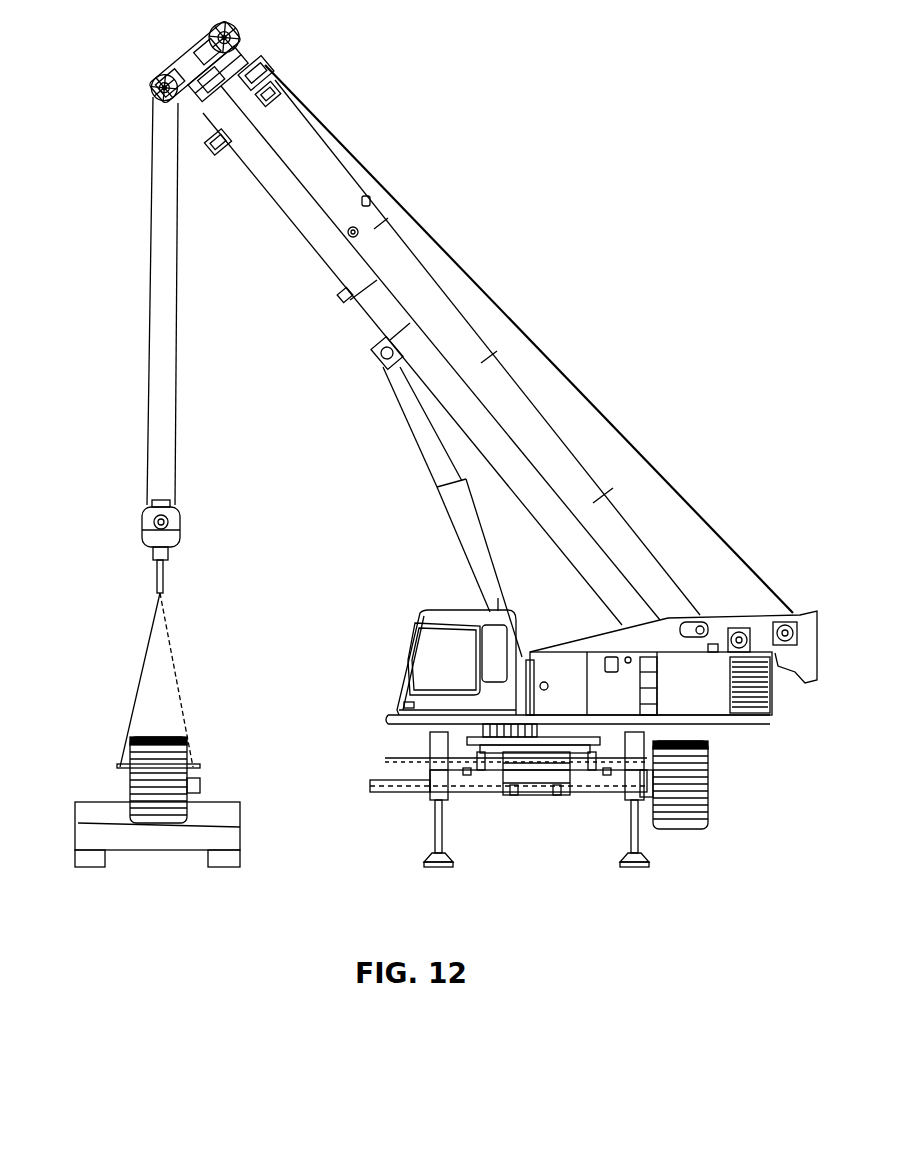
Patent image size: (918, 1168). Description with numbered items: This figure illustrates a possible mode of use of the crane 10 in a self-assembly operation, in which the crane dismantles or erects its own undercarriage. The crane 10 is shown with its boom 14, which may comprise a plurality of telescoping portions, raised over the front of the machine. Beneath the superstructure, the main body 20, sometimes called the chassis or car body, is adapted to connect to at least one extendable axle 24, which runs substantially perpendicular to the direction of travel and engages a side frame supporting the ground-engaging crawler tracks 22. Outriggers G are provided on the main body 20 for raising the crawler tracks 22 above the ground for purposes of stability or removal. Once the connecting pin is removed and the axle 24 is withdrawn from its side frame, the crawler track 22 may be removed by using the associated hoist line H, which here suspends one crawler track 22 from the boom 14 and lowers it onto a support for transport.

The crane 10 is at (690, 470).
The boom 14 is at (318, 236).
The main body 20 is at (547, 792).
The crawler tracks 22 is at (118, 789).
The extendable axle 24 is at (395, 792).
The outriggers G is at (443, 836).
The hoist line H is at (176, 656).